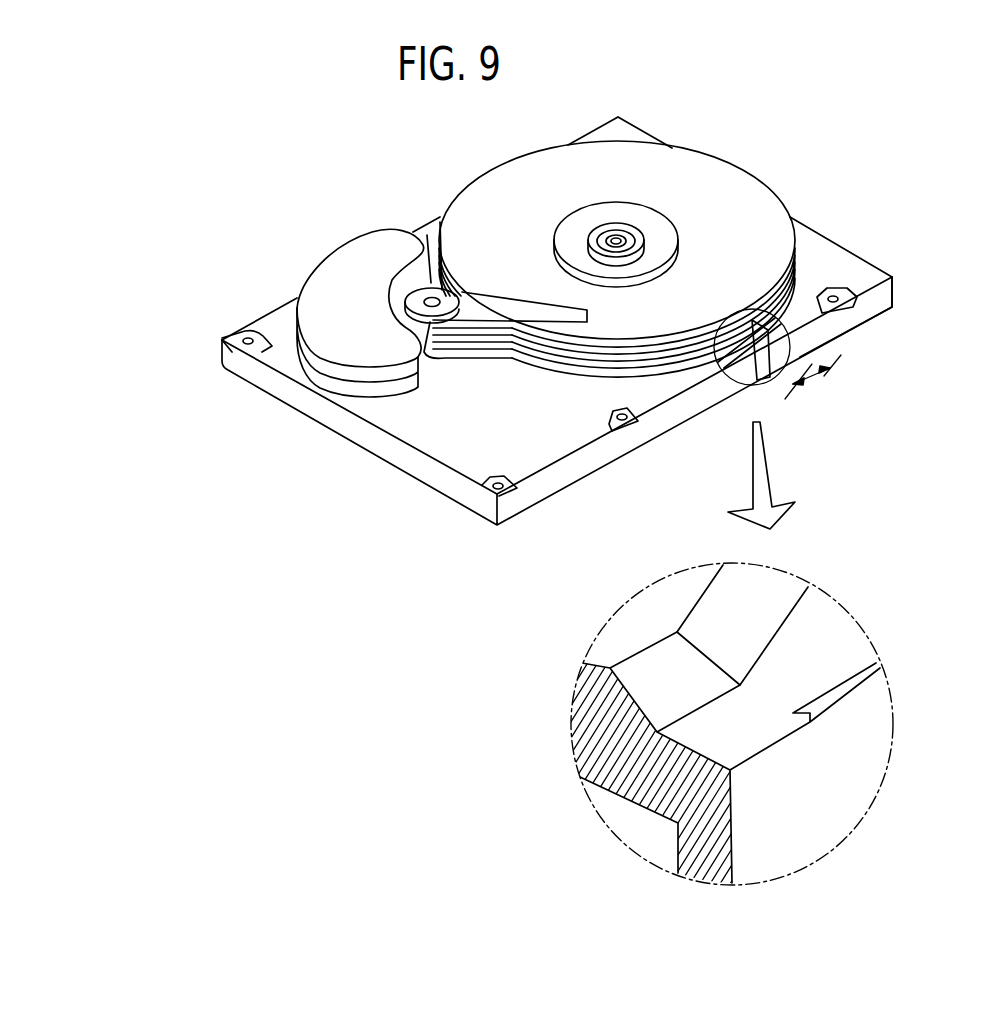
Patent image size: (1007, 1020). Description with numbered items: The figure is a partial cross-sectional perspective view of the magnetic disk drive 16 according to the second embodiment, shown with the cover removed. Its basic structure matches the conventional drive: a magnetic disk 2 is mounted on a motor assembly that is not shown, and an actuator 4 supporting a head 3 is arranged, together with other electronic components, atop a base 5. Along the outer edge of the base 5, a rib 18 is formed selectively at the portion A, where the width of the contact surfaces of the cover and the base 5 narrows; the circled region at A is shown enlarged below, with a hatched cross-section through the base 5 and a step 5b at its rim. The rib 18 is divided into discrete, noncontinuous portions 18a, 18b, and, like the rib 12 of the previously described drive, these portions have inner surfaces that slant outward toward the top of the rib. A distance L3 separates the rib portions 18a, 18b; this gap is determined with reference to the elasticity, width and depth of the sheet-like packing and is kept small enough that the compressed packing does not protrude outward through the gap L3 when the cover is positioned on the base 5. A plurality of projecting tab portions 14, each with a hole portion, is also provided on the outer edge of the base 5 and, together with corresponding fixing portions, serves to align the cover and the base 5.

The magnetic disk drive 16 is at (172, 184).
The magnetic disk 2 is at (758, 214).
The head 3 is at (567, 310).
The actuator 4 is at (428, 358).
The base 5 is at (360, 437).
The groove of base 5b is at (770, 576).
The rib 12 is at (870, 264).
The projecting tab portions 14 is at (235, 348).
The rib 18 is at (860, 497).
The rib portion 18a is at (797, 330).
The rib portion 18b is at (752, 385).
The portion A is at (740, 308).
The distance L3 is at (813, 380).